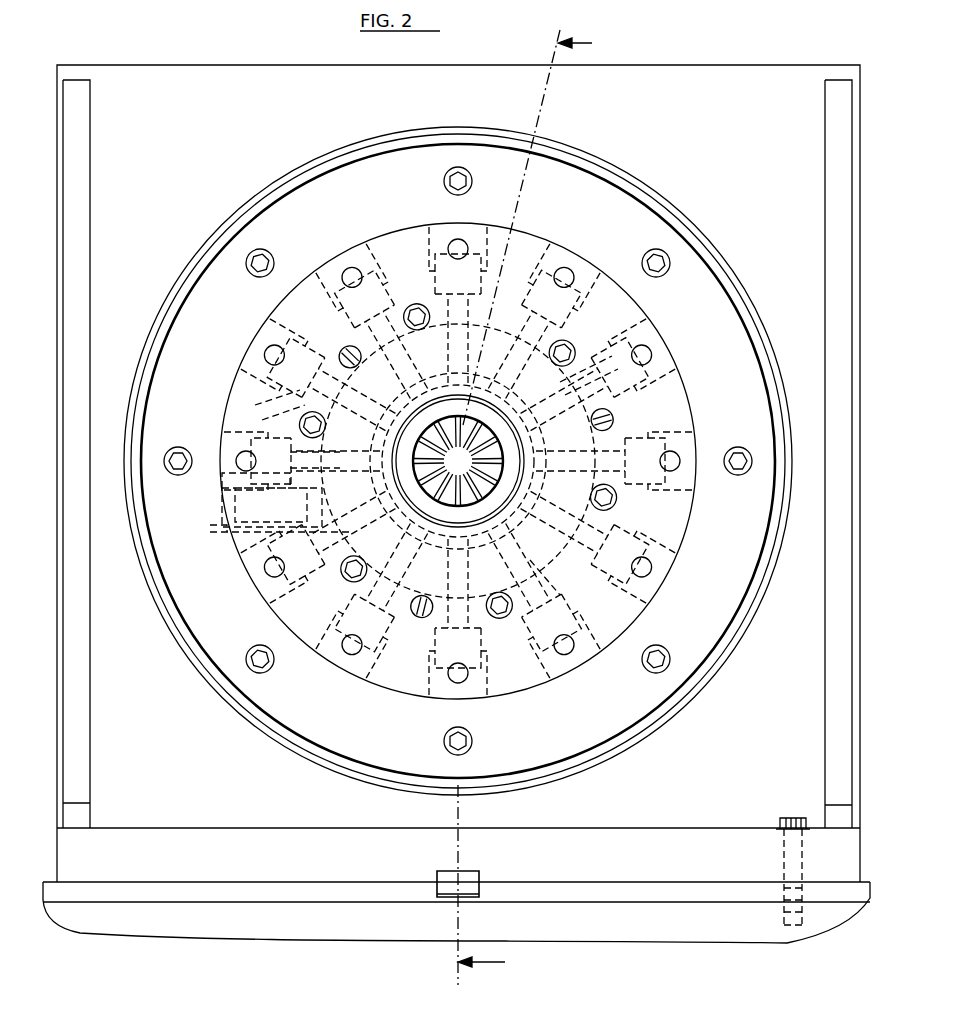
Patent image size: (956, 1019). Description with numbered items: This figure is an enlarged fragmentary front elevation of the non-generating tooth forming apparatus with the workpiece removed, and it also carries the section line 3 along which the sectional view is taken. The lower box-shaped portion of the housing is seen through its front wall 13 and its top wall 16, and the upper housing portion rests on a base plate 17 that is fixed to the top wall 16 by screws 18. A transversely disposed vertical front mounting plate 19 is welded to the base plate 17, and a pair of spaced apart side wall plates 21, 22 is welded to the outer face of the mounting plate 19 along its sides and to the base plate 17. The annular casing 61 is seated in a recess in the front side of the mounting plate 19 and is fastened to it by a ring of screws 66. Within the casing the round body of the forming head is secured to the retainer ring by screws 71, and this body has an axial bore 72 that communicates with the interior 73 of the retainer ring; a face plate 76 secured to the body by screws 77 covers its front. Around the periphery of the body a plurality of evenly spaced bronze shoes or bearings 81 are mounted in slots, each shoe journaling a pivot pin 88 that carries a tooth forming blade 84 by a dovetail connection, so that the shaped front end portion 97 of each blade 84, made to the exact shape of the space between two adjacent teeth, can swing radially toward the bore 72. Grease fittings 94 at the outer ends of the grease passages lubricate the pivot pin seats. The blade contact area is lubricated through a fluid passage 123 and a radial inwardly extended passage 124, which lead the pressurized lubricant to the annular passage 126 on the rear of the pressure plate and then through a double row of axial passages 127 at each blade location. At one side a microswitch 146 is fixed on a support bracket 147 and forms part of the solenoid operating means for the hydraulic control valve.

The section line 3- 3 is at (533, 507).
The front wall 13 is at (705, 935).
The top wall 16 is at (705, 885).
The base plate 17 is at (655, 840).
The screws 18 is at (802, 942).
The front transverse mounting plate 19 is at (214, 80).
The side wall plate 21 is at (82, 252).
The side wall plate 22 is at (838, 158).
The annular casing 61 is at (735, 578).
The screws 66 is at (444, 183).
The screws 71 is at (416, 304).
The axial bore 72 is at (538, 440).
The interior of the retainer ring 73 is at (545, 562).
The face plate 76 is at (668, 540).
The screws 77 is at (352, 348).
The shoe or bearing 81 is at (243, 356).
The tooth forming tool or blade 84 is at (378, 410).
The pivot pin 88 is at (270, 404).
The grease fitting 94 is at (346, 262).
The shaped front end portion 97 is at (458, 461).
The fluid passage 123 is at (608, 387).
The radial inwardly extended passage 124 is at (458, 461).
The annular passage 126 is at (535, 482).
The axial passages 127 is at (392, 548).
The microswitch 146 is at (222, 505).
The support bracket 147 is at (224, 536).